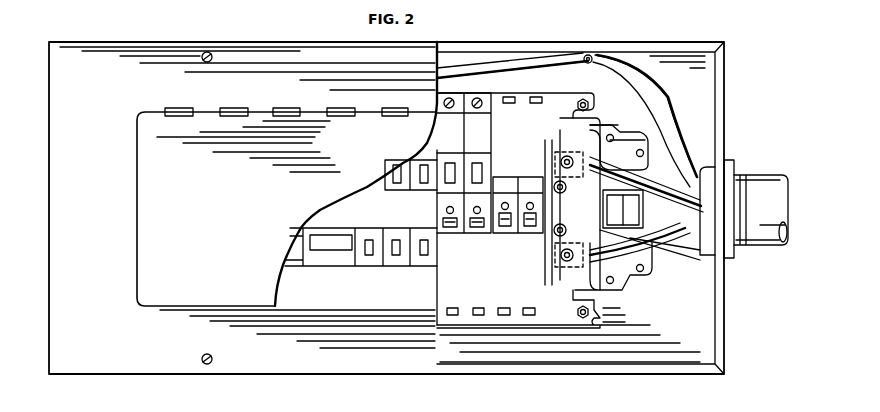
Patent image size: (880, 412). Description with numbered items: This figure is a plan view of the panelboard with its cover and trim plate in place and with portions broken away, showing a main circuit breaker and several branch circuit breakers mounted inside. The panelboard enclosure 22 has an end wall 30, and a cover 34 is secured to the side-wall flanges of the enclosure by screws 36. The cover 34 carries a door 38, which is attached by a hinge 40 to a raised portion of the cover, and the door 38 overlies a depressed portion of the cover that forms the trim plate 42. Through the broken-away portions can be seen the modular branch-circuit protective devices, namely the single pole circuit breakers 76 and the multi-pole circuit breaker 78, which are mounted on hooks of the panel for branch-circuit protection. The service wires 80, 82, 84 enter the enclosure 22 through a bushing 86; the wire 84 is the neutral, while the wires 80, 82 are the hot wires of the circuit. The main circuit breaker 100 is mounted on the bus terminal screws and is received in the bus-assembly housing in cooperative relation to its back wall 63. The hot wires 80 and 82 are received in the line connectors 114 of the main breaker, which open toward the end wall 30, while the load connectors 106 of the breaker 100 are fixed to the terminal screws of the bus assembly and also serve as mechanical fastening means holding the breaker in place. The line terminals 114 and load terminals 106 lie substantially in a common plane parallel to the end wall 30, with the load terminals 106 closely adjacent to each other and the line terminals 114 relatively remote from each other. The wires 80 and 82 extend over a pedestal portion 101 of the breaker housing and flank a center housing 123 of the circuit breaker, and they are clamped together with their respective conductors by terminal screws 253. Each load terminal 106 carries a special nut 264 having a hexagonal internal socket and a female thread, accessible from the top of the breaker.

The enclosure 22 is at (680, 42).
The end wall 30 is at (724, 121).
The cover 34 is at (143, 62).
The screws 36 is at (212, 54).
The door 38 is at (220, 198).
The hinge 40 is at (290, 108).
The trim plate 42 is at (432, 130).
The back wall 63 is at (550, 272).
The single pole circuit breakers 76 is at (457, 94).
The multi-pole circuit breaker 78 is at (320, 265).
The service wire 80 is at (624, 150).
The service wire 82 is at (665, 246).
The service wire 84 is at (668, 103).
The bushing 86 is at (707, 255).
The circuit breaker 100 is at (612, 117).
The pedestal portion 101 is at (630, 275).
The load connectors 106 is at (550, 176).
The line connectors 114 is at (552, 160).
The center housing 123 is at (648, 230).
The terminal screws 253 is at (567, 156).
The nut 264 is at (568, 188).